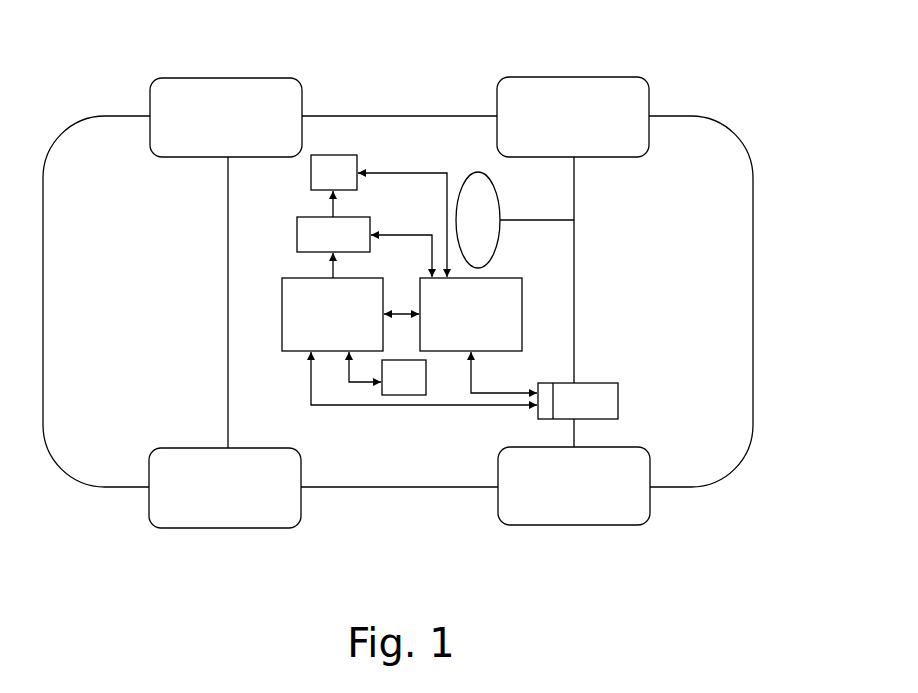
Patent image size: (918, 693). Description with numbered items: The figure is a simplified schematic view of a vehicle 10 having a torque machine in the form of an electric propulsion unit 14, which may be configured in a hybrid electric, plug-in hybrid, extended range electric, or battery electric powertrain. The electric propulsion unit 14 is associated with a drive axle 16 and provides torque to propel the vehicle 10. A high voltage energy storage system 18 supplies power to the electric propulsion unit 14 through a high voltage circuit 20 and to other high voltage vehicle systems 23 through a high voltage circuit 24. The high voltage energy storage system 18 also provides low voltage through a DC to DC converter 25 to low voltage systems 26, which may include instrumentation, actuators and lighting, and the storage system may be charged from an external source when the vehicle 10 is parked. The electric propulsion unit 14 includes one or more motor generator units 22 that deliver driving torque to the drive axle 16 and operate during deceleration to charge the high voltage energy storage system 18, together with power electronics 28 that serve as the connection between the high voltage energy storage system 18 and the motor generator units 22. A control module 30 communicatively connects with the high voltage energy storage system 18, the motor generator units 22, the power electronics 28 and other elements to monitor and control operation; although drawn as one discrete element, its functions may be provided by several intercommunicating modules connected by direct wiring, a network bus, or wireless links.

The vehicle 10 is at (750, 86).
The electric propulsion unit 14 is at (602, 376).
The drive axle 16 is at (574, 302).
The high voltage energy storage system 18 is at (332, 314).
The high voltage circuit 20 is at (390, 405).
The motor generator units 22 is at (612, 405).
The high voltage vehicle systems 23 is at (404, 377).
The high voltage circuit 24 is at (350, 378).
The DC to DC converter 25 is at (333, 234).
The low voltage systems 26 is at (334, 172).
The power electronics 28 is at (547, 407).
The control module 30 is at (471, 314).